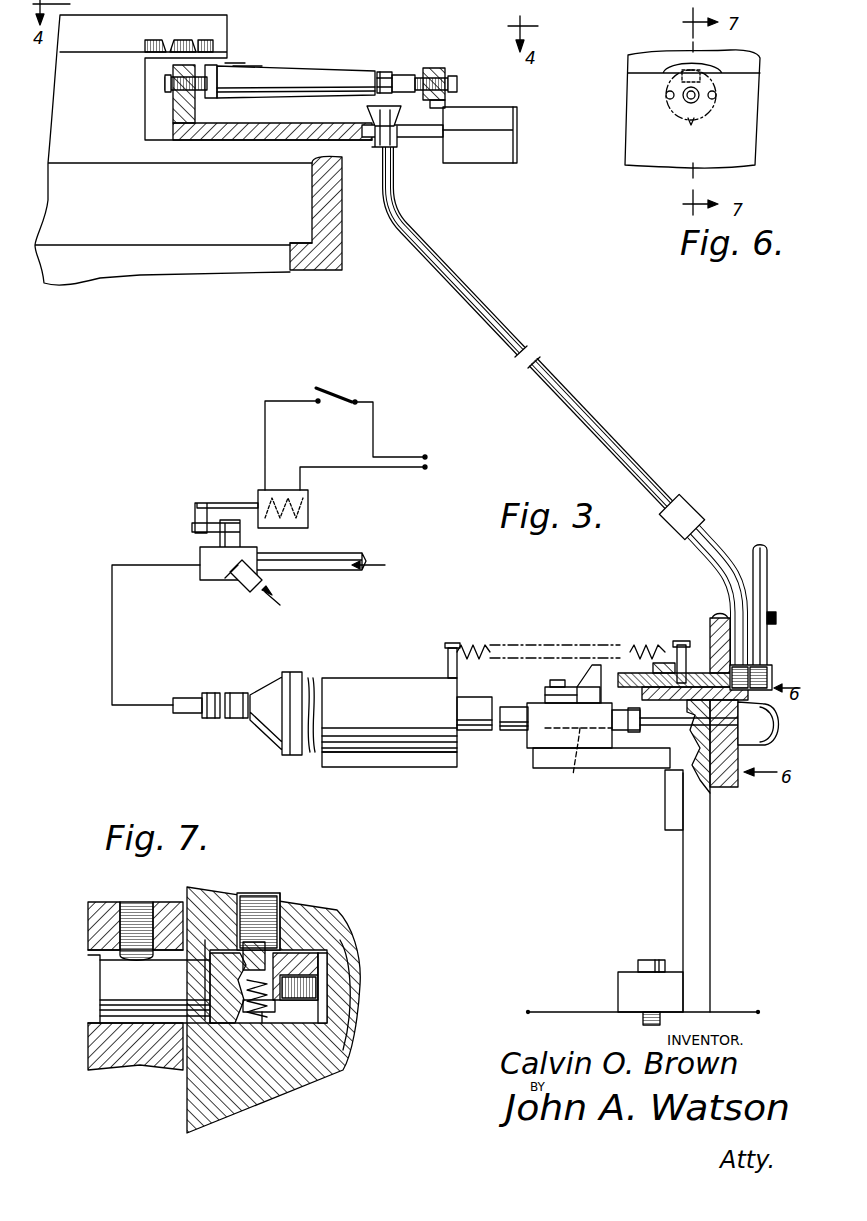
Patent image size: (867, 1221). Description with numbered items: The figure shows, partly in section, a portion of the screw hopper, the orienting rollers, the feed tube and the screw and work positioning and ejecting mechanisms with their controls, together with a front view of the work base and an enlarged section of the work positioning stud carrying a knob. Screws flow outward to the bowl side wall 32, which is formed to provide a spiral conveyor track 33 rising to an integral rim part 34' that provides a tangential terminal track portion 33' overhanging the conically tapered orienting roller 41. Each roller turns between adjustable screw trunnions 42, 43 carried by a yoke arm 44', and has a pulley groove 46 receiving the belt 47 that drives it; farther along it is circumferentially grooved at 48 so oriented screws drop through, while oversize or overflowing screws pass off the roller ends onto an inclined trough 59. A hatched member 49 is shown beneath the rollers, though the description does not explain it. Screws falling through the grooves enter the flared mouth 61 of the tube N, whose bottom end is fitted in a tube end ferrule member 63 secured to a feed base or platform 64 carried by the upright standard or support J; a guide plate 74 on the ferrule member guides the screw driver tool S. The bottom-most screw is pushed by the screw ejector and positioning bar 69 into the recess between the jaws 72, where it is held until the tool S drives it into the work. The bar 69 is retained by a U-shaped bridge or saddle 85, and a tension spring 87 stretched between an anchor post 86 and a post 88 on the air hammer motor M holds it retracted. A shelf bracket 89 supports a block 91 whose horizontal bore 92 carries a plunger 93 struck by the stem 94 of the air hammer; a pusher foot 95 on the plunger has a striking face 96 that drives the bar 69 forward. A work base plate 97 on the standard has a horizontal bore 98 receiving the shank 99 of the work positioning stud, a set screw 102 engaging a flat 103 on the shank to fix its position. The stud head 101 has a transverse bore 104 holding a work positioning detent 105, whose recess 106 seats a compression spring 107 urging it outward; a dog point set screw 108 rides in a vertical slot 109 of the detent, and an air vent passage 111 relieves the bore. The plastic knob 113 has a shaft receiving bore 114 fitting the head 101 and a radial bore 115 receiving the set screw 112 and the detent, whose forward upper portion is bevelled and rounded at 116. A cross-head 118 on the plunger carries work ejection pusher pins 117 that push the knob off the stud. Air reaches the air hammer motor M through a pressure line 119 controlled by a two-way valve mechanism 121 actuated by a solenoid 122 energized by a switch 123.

In FIG. 3, the bowl side wall 32 is at (342, 258).
In FIG. 3, the spiral conveyor track 33 is at (302, 213).
In FIG. 3, the terminal track portion 33' is at (214, 38).
In FIG. 3, the integral rim part 34' is at (203, 144).
In FIG. 3, the orienting roller 41 is at (305, 74).
In FIG. 3, the adjustable screw trunnion 42 is at (165, 82).
In FIG. 3, the adjustable screw trunnion 43 is at (458, 85).
In FIG. 3, the yoke arm 44' is at (457, 77).
In FIG. 3, the circumferentially extending groove 46 is at (240, 68).
In FIG. 3, the belt 47 is at (212, 96).
In FIG. 3, the circumferential groove 48 is at (390, 82).
In FIG. 3, the support bar 49 is at (272, 123).
In FIG. 3, the inclined trough 59 is at (520, 142).
In FIG. 3, the flared mouth 61 is at (396, 132).
In FIG. 3, the tube end ferrule member 63 is at (712, 640).
In FIG. 3, the feed base or platform 64 is at (665, 700).
In FIG. 6, the feed base or platform 64 is at (755, 70).
In FIG. 3, the screw ejector and positioning bar 69 is at (624, 672).
In FIG. 3, the jaws 72 is at (772, 676).
In FIG. 3, the guide plate 74 is at (773, 620).
In FIG. 3, the U-shaped bridge or saddle 85 is at (664, 660).
In FIG. 3, the anchor post 86 is at (678, 640).
In FIG. 3, the tension spring 87 is at (482, 648).
In FIG. 3, the post 88 is at (447, 668).
In FIG. 3, the shelf bracket 89 is at (603, 770).
In FIG. 3, the block 91 is at (560, 745).
In FIG. 3, the horizontal bore 92 is at (582, 745).
In FIG. 3, the plunger 93 is at (518, 732).
In FIG. 3, the stem 94 is at (486, 732).
In FIG. 3, the pusher foot 95 is at (577, 690).
In FIG. 3, the striking face 96 is at (598, 680).
In FIG. 3, the work base plate 97 is at (735, 788).
In FIG. 6, the work base plate 97 is at (735, 152).
In FIG. 7, the work base plate 97 is at (88, 1058).
In FIG. 7, the horizontal bore 98 is at (88, 956).
In FIG. 7, the shank 99 is at (105, 990).
In FIG. 6, the stud head 101 is at (688, 115).
In FIG. 7, the stud head 101 is at (335, 960).
In FIG. 7, the set screw 102 is at (107, 905).
In FIG. 7, the flat 103 is at (97, 958).
In FIG. 7, the transverse bore 104 is at (290, 1087).
In FIG. 7, the work positioning detent 105 is at (335, 925).
In FIG. 7, the recess 106 is at (215, 1030).
In FIG. 7, the compression spring 107 is at (248, 1022).
In FIG. 7, the dog point set screw 108 is at (348, 975).
In FIG. 7, the vertical slot 109 is at (325, 945).
In FIG. 7, the air vent passage 111 is at (262, 1070).
In FIG. 3, the set screw 112 is at (758, 665).
In FIG. 3, the plastic knob 113 is at (767, 741).
In FIG. 7, the plastic knob 113 is at (338, 1052).
In FIG. 7, the shaft receiving bore 114 is at (205, 940).
In FIG. 7, the radial bore 115 is at (276, 912).
In FIG. 7, the bevelled and rounded portion 116 is at (312, 902).
In FIG. 3, the work ejection pusher pins 117 is at (672, 790).
In FIG. 6, the work ejection pusher pins 117 is at (716, 97).
In FIG. 3, the cross-head 118 is at (635, 735).
In FIG. 3, the pressure line 119 is at (112, 640).
In FIG. 3, the two-way valve mechanism 121 is at (227, 585).
In FIG. 3, the solenoid 122 is at (310, 511).
In FIG. 3, the switch 123 is at (342, 398).
In FIG. 3, the air hammer motor M is at (358, 672).
In FIG. 3, the tube N is at (622, 432).
In FIG. 3, the screw driver tool S is at (768, 584).
In FIG. 3, the upright standard or support J is at (715, 905).